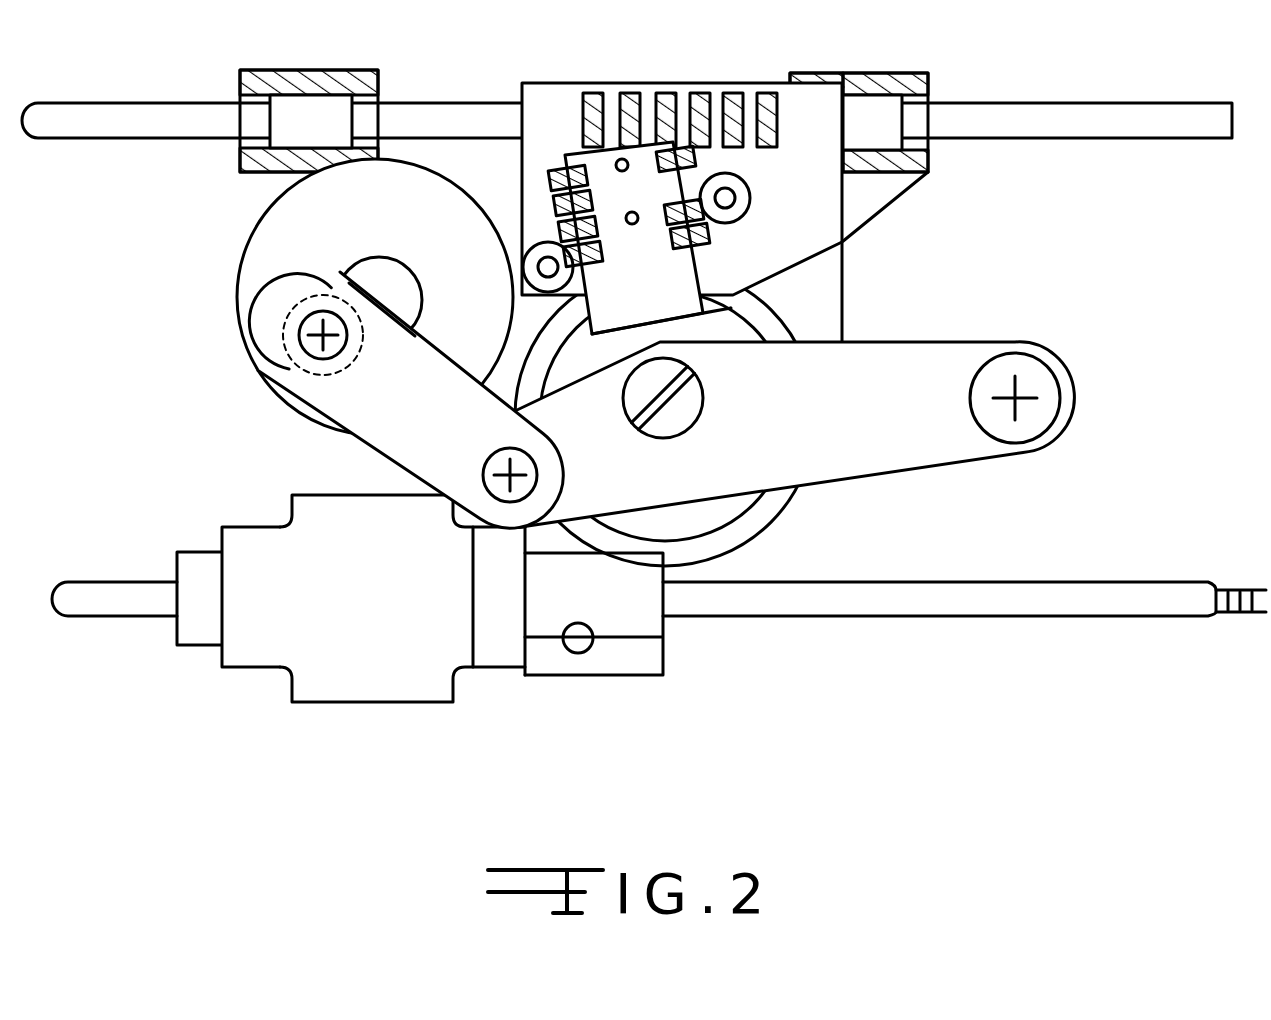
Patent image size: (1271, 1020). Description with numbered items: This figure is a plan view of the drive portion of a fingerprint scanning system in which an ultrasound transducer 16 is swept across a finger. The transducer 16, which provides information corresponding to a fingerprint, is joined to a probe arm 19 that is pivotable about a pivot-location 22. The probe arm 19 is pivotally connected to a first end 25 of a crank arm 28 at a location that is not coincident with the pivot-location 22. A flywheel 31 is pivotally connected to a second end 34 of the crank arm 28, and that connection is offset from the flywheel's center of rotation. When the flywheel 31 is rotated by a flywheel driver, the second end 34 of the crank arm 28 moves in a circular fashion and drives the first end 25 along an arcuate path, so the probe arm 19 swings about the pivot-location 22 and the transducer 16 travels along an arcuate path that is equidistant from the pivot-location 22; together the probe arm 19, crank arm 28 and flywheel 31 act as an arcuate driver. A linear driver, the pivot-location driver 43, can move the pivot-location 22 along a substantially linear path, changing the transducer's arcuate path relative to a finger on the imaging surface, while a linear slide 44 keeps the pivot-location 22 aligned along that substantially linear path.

The ultrasound transducer 16 is at (1032, 423).
The probe arm 19 is at (942, 370).
The pivot-location 22 is at (677, 413).
The first end 25 is at (543, 460).
The crank arm 28 is at (393, 404).
The flywheel 31 is at (268, 243).
The second end 34 is at (278, 335).
The pivot-location driver 43 is at (325, 663).
The linear slide 44 is at (138, 113).